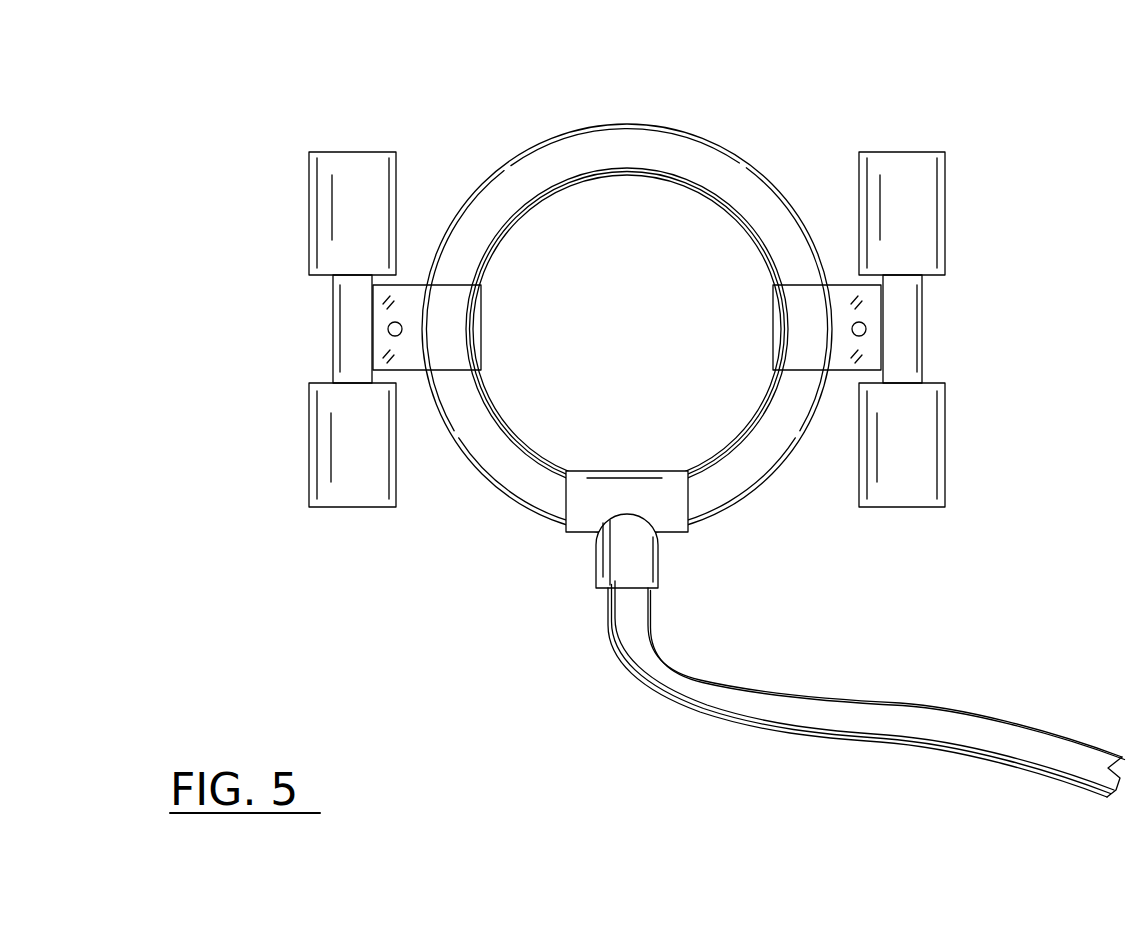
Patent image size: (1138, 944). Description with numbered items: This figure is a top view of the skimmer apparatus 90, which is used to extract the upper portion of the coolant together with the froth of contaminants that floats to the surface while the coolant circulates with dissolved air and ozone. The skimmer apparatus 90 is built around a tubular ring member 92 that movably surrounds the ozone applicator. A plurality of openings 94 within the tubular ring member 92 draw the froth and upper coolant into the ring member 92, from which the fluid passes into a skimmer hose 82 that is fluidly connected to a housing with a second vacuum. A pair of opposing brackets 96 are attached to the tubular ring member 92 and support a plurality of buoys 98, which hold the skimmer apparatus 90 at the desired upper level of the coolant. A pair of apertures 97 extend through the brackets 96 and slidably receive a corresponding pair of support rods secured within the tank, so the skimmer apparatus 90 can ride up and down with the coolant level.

The skimmer hose 82 is at (862, 718).
The skimmer apparatus 90 is at (658, 122).
The tubular ring member 92 is at (565, 165).
The openings 94 is at (768, 183).
The brackets 96 is at (409, 297).
The apertures 97 is at (388, 330).
The buoys 98 is at (331, 232).